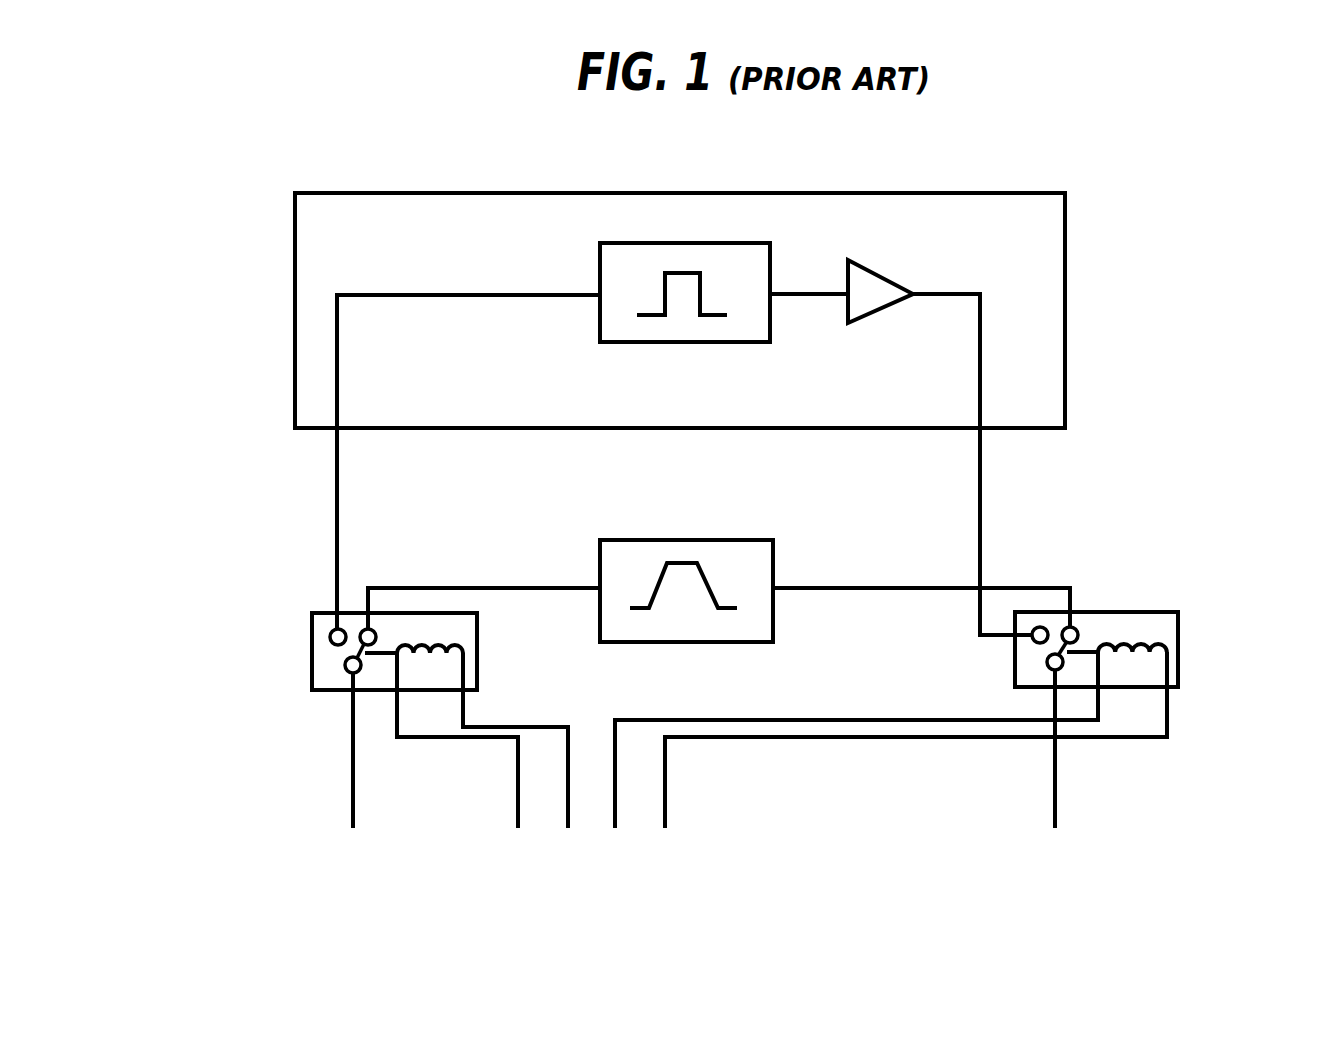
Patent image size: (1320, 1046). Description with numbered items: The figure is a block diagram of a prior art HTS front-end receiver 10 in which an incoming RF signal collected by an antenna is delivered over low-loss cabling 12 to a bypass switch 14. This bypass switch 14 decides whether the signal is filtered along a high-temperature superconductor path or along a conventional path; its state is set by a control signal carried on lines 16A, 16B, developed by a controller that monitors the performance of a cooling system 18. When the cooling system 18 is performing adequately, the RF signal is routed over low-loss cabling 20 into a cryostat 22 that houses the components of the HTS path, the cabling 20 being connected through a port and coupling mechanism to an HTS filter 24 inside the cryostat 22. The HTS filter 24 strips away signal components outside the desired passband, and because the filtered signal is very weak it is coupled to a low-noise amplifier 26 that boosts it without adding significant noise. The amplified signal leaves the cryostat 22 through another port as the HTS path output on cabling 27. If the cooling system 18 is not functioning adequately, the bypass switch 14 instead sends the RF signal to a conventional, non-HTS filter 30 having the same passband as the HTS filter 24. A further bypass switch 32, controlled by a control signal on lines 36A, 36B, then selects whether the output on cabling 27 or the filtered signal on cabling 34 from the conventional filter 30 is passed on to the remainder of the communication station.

The HTS front-end receiver 10 is at (1133, 427).
The low-loss cabling 12 is at (350, 792).
The bypass switch 14 is at (312, 637).
The line 16A is at (447, 738).
The line 16B is at (530, 723).
The cooling system 18 is at (283, 345).
The low-loss cabling 20 is at (338, 537).
The cryostat 22 is at (1065, 260).
The HTS filter 24 is at (695, 243).
The amplifier 26 is at (880, 275).
The cabling 27 is at (982, 515).
The conventional filter 30 is at (748, 540).
The bypass switch 32 is at (1178, 623).
The cabling 34 is at (1070, 587).
The line 36A is at (1098, 700).
The line 36B is at (945, 739).